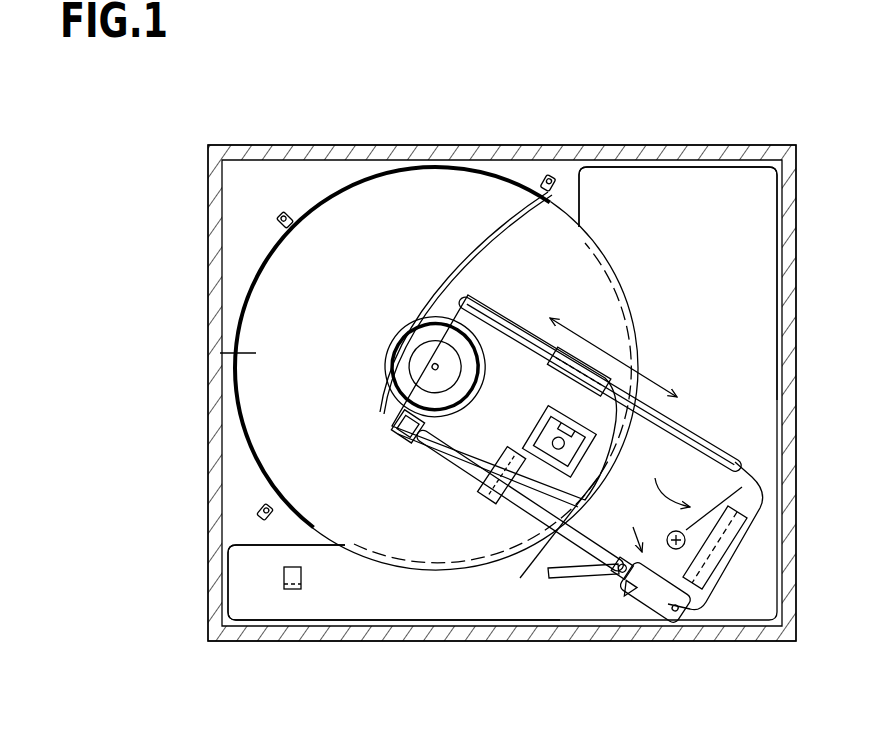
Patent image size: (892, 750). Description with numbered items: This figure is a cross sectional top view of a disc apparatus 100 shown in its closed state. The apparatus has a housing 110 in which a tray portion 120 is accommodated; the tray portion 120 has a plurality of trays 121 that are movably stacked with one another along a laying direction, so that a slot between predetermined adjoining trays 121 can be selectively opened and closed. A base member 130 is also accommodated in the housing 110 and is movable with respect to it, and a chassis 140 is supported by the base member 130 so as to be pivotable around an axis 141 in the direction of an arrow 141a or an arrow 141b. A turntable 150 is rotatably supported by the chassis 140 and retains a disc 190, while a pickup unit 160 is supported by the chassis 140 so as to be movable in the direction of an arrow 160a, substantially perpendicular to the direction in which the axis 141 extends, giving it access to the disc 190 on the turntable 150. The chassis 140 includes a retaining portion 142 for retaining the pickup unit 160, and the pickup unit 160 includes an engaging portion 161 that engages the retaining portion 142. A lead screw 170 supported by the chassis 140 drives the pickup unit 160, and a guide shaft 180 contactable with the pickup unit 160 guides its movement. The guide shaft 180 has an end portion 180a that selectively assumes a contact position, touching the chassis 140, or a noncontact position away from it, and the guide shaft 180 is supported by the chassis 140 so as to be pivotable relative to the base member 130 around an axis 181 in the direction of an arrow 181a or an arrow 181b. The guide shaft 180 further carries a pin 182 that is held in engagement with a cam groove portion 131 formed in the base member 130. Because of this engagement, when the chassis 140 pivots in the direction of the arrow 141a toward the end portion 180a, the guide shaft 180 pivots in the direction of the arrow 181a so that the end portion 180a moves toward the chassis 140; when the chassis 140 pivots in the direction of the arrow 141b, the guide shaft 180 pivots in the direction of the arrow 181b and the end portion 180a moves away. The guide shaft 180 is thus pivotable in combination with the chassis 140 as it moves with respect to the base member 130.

The disc apparatus 100 is at (515, 78).
The housing 110 is at (614, 152).
The tray portion 120 is at (246, 261).
The tray 121 is at (220, 353).
The base member 130 is at (698, 156).
The cam groove portion 131 is at (548, 590).
The chassis 140 is at (509, 302).
The axis 141 is at (745, 470).
The arrow 141a is at (628, 528).
The arrow 141b is at (660, 481).
The retaining portion 142 is at (728, 600).
The turntable 150 is at (396, 342).
The pickup unit 160 is at (546, 441).
The arrow 160a is at (646, 372).
The engaging portion 161 is at (549, 539).
The lead screw 170 is at (677, 440).
The guide shaft 180 is at (459, 488).
The end portion 180a is at (398, 447).
The axis 181 is at (669, 615).
The arrow 181a is at (667, 600).
The arrow 181b is at (623, 590).
The pin 182 is at (616, 573).
The disc 190 is at (590, 226).